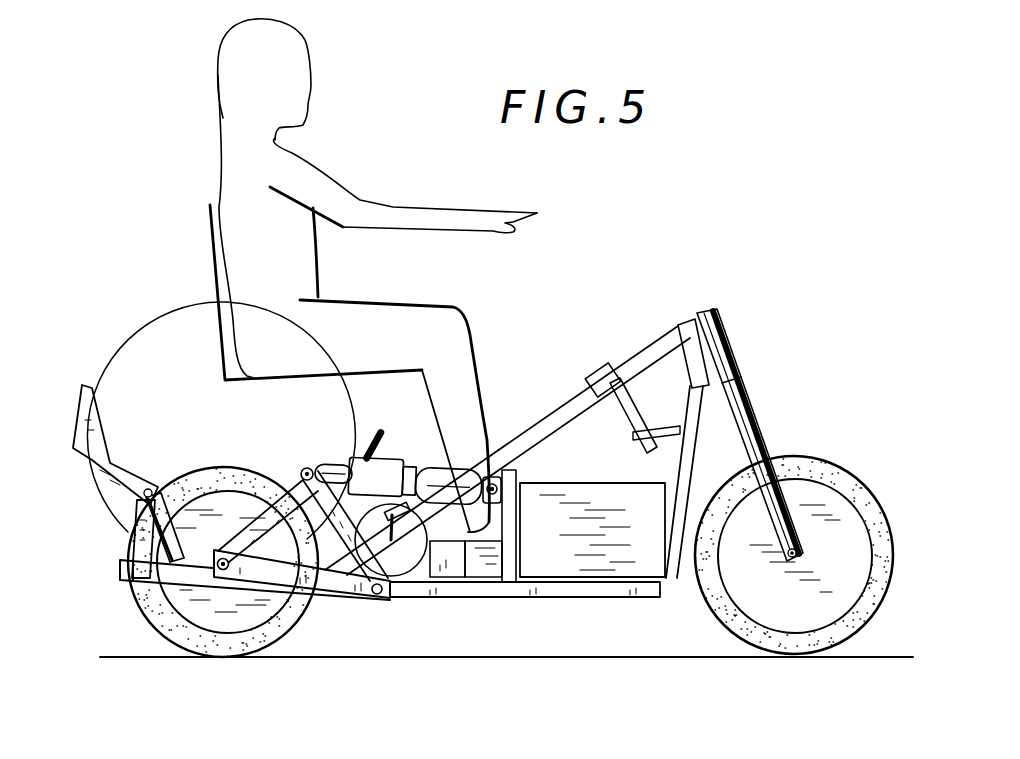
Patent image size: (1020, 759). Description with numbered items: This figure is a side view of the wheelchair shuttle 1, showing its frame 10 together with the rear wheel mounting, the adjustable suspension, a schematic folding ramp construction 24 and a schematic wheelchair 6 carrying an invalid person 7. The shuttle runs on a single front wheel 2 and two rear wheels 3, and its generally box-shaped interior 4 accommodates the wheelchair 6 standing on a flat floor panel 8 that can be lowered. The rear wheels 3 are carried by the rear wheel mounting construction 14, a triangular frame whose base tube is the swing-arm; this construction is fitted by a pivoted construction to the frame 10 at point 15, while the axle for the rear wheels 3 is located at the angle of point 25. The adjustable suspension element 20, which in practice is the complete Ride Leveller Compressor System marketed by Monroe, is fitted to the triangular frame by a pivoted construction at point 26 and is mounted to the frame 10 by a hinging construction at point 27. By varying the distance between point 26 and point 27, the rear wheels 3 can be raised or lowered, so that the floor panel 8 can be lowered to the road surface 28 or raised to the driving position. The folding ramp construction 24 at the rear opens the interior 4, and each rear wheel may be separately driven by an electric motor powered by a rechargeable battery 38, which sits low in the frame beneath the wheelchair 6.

The wheelchair shuttle 1 is at (726, 300).
The front wheel 2 is at (800, 456).
The rear wheel 3 is at (133, 598).
The box-shaped interior 4 is at (511, 356).
The wheelchair 6 is at (187, 263).
The invalid person 7 is at (333, 188).
The floor panel 8 is at (548, 571).
The frame 10 is at (548, 415).
The rear wheel mounting construction 14 is at (334, 587).
The pivot point 15 is at (396, 594).
The adjustable suspension element 20 is at (388, 466).
The folding ramp construction 24 is at (99, 409).
The rear wheel axle point 25 is at (231, 578).
The suspension pivot point 26 is at (306, 467).
The suspension hinge point 27 is at (505, 480).
The road surface 28 is at (549, 645).
The rechargeable battery 38 is at (477, 591).